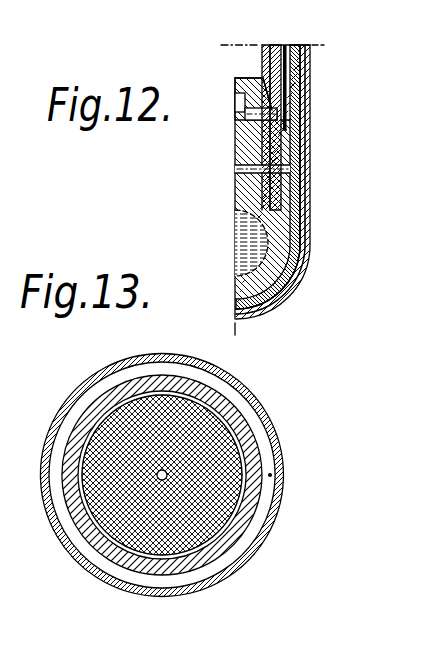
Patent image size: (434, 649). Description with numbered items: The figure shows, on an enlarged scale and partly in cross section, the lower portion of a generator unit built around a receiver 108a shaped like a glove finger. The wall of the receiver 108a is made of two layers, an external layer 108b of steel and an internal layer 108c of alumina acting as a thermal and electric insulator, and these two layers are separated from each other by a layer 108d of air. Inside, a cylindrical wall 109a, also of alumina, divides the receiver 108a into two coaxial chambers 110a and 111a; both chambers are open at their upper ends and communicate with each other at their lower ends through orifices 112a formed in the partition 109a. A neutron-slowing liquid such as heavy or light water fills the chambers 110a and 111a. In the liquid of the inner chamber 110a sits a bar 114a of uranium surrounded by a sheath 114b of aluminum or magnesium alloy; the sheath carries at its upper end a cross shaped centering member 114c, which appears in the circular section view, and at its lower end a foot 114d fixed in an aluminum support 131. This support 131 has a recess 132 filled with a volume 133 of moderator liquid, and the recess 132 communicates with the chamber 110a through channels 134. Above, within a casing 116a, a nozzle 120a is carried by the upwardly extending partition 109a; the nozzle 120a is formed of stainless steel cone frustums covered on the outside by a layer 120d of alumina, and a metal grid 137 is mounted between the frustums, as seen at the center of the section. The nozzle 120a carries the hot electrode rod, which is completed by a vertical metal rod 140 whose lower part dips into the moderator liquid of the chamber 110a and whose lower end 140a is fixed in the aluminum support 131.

In FIG. 12, the receiver 108a is at (311, 60).
In FIG. 12, the external layer 108b is at (310, 147).
In FIG. 12, the internal layer 108c is at (300, 210).
In FIG. 12, the layer of air 108d is at (305, 161).
In FIG. 12, the cylindrical wall 109a is at (263, 82).
In FIG. 12, the chamber 110a is at (271, 61).
In FIG. 12, the chamber 111a is at (300, 47).
In FIG. 12, the orifices 112a is at (303, 83).
In FIG. 12, the bar of uranium 114a is at (245, 55).
In FIG. 12, the sheath 114b is at (277, 74).
In FIG. 13, the cross shaped centering member 114c is at (167, 478).
In FIG. 12, the foot 114d is at (305, 115).
In FIG. 13, the casing 116a is at (279, 465).
In FIG. 13, the nozzle 120a is at (212, 412).
In FIG. 13, the layer of alumina 120d is at (240, 422).
In FIG. 12, the aluminum support 131 is at (287, 240).
In FIG. 12, the recess 132 is at (267, 268).
In FIG. 12, the volume of moderator liquid 133 is at (245, 238).
In FIG. 12, the channels 134 is at (302, 185).
In FIG. 13, the metal grid 137 is at (167, 445).
In FIG. 12, the vertical metal rod 140 is at (288, 104).
In FIG. 13, the vertical metal rod 140 is at (272, 477).
In FIG. 12, the lower end 140a is at (288, 129).